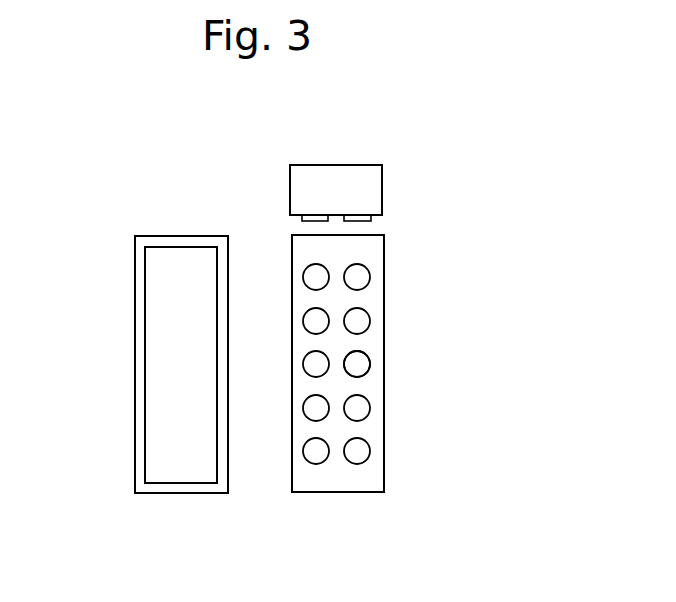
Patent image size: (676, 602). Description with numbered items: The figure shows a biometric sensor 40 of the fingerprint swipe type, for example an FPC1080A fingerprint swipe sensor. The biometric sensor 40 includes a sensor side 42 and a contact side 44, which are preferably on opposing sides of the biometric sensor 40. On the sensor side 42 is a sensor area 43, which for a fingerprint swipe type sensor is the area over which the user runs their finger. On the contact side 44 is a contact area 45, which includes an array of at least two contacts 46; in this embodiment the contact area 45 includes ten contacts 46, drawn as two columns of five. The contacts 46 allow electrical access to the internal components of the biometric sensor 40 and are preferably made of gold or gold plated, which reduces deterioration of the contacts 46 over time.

The biometric sensor 40 is at (393, 148).
The sensor side 42 is at (128, 268).
The sensor area 43 is at (175, 368).
The contact side 44 is at (395, 330).
The contact area 45 is at (338, 385).
The contacts 46 is at (358, 277).